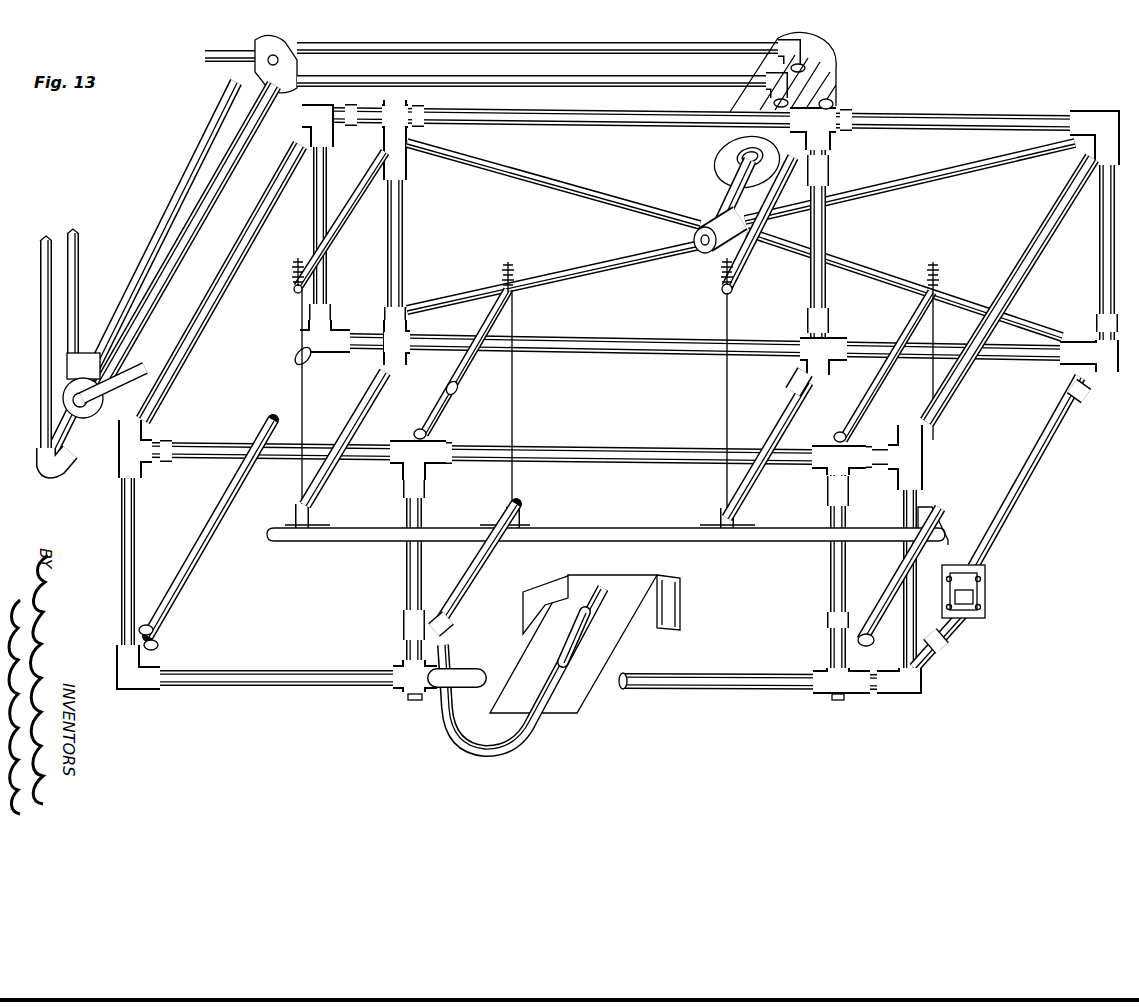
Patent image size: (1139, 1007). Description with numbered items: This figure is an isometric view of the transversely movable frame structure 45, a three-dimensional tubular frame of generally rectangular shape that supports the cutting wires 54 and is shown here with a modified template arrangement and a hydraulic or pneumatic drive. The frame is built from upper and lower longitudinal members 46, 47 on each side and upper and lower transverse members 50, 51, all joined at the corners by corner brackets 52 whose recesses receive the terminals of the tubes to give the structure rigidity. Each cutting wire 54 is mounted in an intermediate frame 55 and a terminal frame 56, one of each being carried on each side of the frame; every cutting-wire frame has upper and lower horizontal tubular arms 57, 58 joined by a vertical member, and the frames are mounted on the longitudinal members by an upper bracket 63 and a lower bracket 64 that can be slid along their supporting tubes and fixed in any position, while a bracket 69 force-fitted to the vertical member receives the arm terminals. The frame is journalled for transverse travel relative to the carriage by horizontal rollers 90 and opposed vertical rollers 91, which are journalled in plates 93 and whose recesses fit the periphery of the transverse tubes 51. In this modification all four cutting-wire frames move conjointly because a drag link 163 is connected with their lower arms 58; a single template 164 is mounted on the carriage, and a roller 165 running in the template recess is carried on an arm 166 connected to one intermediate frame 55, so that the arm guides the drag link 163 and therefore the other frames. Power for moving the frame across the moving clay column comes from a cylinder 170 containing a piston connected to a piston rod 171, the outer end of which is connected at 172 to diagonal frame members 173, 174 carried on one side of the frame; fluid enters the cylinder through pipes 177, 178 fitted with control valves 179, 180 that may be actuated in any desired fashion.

The frame structure 45 is at (1098, 262).
The upper longitudinal member 46 is at (968, 112).
The lower longitudinal member 47 is at (643, 356).
The upper transverse member 50 is at (193, 354).
The lower transverse member 51 is at (208, 550).
The corner bracket 52 is at (117, 467).
The cutting wire 54 is at (936, 330).
The intermediate frame 55 is at (746, 278).
The terminal frame 56 is at (334, 246).
The upper horizontal tubular arm 57 is at (448, 384).
The lower horizontal tubular arm 58 is at (748, 493).
The upper bracket 63 is at (416, 437).
The lower bracket 64 is at (403, 690).
The bracket 69 is at (440, 437).
The horizontal roller 90 is at (957, 562).
The vertical roller 91 is at (980, 603).
The plate 93 is at (986, 593).
The drag link 163 is at (641, 527).
The template 164 is at (597, 690).
The roller 165 is at (574, 651).
The arm 166 is at (533, 667).
The cylinder 170 is at (838, 92).
The piston rod 171 is at (727, 184).
The connection 172 is at (706, 255).
The diagonal frame member 173 is at (886, 276).
The diagonal frame member 174 is at (973, 180).
The pipe 177 is at (631, 80).
The pipe 178 is at (650, 46).
The control valve 179 is at (147, 363).
The control valve 180 is at (223, 60).